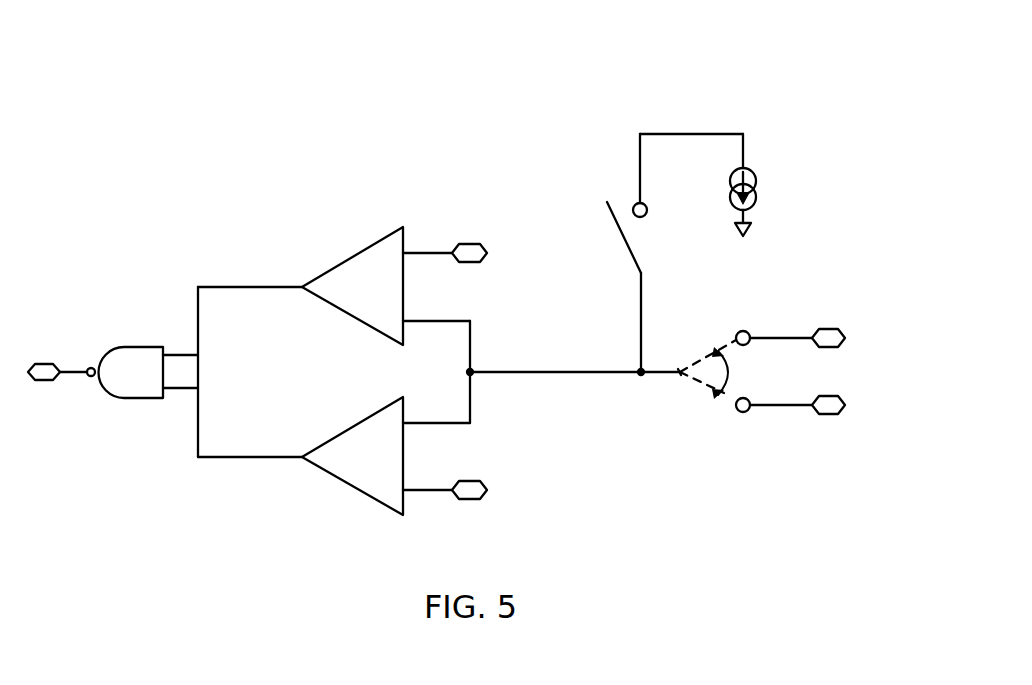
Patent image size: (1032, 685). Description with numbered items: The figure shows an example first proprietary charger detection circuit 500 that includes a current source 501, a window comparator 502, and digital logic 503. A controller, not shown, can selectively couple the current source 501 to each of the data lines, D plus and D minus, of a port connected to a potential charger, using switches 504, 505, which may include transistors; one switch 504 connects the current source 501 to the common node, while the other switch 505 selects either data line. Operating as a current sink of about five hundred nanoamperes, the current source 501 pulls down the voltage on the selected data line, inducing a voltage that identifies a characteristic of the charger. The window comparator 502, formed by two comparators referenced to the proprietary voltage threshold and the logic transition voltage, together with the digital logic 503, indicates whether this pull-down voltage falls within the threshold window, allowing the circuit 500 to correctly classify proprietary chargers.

The first proprietary charger detection circuit 500 is at (838, 65).
The current source 501 is at (750, 167).
The window comparator 502 is at (323, 203).
The digital logic 503 is at (130, 347).
The switch 504 is at (621, 211).
The switch 505 is at (690, 422).